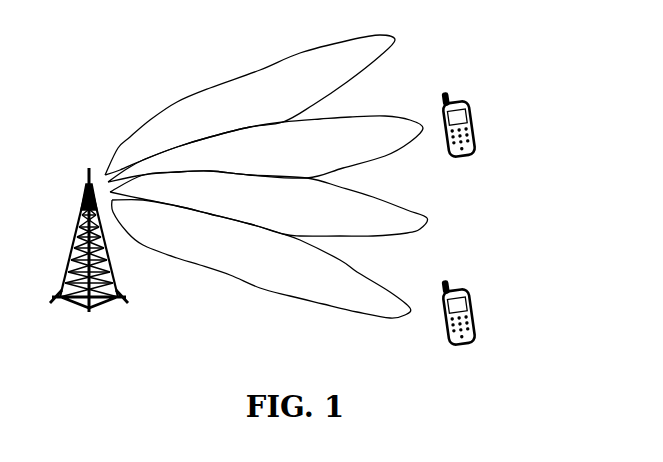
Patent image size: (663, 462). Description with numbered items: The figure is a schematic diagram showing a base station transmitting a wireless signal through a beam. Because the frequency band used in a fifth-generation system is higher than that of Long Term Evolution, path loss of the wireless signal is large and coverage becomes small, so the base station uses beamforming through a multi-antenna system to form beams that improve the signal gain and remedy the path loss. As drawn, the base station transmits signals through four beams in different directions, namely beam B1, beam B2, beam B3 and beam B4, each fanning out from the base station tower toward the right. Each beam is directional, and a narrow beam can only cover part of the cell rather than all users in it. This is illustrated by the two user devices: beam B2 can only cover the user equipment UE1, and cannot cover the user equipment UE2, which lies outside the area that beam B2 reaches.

The beam B1 is at (250, 105).
The beam B2 is at (265, 149).
The beam B3 is at (268, 203).
The beam B4 is at (261, 259).
The user equipment UE1 is at (485, 124).
The user equipment UE2 is at (488, 312).